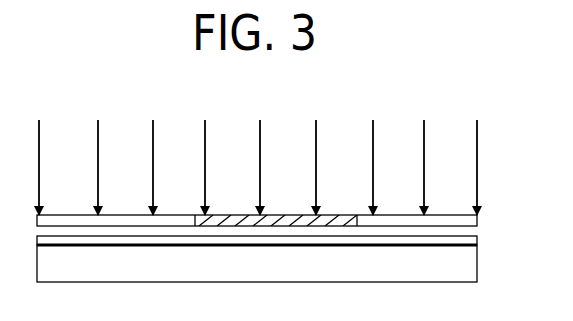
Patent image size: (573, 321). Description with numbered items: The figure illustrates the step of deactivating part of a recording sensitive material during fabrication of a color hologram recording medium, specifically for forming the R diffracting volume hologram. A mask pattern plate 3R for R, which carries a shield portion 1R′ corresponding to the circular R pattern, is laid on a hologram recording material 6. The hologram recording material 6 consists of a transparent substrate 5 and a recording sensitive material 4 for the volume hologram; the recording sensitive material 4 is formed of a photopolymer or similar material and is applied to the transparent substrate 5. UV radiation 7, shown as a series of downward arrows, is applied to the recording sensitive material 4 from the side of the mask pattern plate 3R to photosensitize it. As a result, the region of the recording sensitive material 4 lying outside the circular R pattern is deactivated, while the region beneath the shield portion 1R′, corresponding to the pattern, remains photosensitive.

The UV radiation 7 is at (479, 162).
The mask pattern plate 3R is at (477, 217).
The shield portion 1R′ is at (334, 213).
The recording sensitive material 4 is at (477, 236).
The transparent substrate 5 is at (537, 230).
The hologram recording material 6 is at (301, 258).